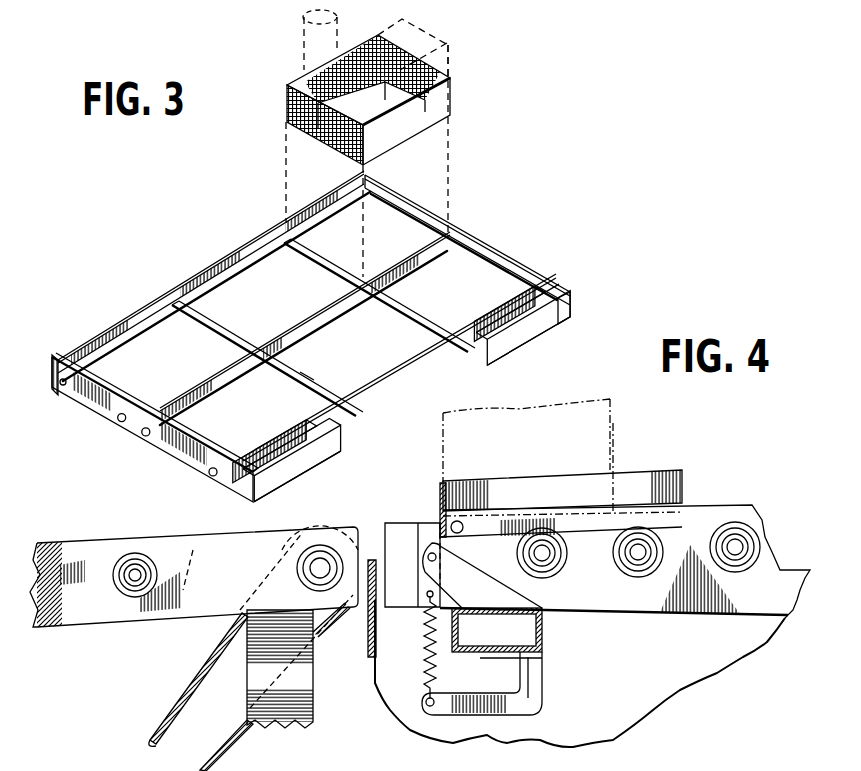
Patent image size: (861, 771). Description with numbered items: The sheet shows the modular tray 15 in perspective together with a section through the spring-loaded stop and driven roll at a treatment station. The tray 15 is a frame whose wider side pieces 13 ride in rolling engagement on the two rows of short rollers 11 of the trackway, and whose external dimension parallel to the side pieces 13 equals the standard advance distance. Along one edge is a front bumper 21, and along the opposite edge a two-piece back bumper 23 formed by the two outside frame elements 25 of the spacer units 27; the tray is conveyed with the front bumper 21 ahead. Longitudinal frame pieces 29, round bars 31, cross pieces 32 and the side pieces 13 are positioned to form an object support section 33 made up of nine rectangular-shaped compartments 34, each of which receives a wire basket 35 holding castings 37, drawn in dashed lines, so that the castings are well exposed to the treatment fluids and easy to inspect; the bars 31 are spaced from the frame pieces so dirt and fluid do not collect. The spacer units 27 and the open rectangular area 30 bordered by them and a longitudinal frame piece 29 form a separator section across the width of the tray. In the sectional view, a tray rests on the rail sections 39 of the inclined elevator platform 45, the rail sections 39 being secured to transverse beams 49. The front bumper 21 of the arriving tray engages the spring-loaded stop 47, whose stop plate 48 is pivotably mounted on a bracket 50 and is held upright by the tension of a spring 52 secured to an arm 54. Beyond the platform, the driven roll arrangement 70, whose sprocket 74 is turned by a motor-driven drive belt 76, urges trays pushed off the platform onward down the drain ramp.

In FIG. 4, the short rollers 11 is at (143, 610).
In FIG. 3, the side pieces 13 is at (497, 240).
In FIG. 3, the modular tray 15 is at (246, 245).
In FIG. 4, the modular tray 15 is at (652, 485).
In FIG. 3, the front bumper 21 is at (120, 328).
In FIG. 3, the two-piece back bumper 23 is at (536, 342).
In FIG. 3, the outside frame elements 25 is at (548, 324).
In FIG. 3, the spacer units 27 is at (538, 312).
In FIG. 3, the longitudinal frame pieces 29 is at (288, 327).
In FIG. 3, the open rectangular area 30 is at (478, 345).
In FIG. 3, the bars 31 is at (262, 266).
In FIG. 3, the cross pieces 32 is at (307, 372).
In FIG. 3, the object support section 33 is at (466, 207).
In FIG. 3, the rectangular-shaped compartments 34 is at (373, 352).
In FIG. 3, the baskets 35 is at (437, 104).
In FIG. 3, the castings 37 is at (303, 20).
In FIG. 4, the castings 37 is at (614, 425).
In FIG. 4, the rail sections 39 is at (653, 608).
In FIG. 4, the inclined elevator platform 45 is at (720, 506).
In FIG. 4, the spring-loaded stop 47 is at (550, 673).
In FIG. 4, the stop plate 48 is at (432, 528).
In FIG. 4, the transverse beams 49 is at (543, 632).
In FIG. 4, the bracket 50 is at (455, 572).
In FIG. 4, the spring 52 is at (424, 628).
In FIG. 4, the arm 54 is at (532, 696).
In FIG. 4, the driven roll arrangement 70 is at (343, 527).
In FIG. 4, the sprocket 74 is at (325, 628).
In FIG. 4, the drive belt 76 is at (228, 742).